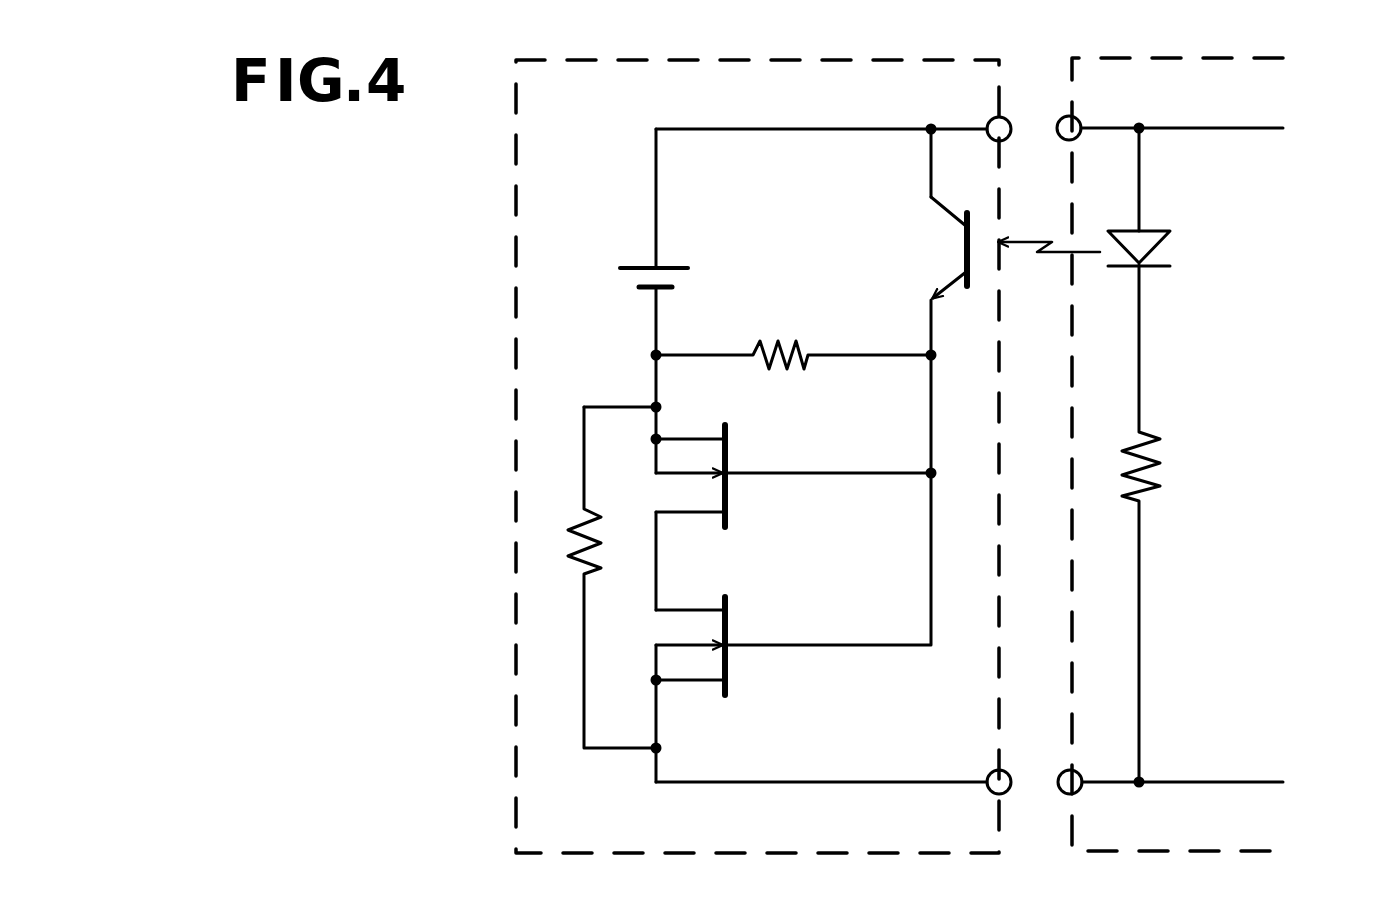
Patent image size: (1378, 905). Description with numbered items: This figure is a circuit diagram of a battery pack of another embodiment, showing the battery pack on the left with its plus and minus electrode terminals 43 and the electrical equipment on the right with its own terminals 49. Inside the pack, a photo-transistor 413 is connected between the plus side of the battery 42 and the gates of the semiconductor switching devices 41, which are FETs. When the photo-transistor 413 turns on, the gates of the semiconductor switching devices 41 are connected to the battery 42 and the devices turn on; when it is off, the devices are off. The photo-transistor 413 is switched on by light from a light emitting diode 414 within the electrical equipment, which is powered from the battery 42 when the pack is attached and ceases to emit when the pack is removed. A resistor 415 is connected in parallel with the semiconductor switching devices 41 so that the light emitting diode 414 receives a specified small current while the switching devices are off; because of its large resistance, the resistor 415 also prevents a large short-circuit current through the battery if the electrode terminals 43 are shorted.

The semiconductor switching devices 41 is at (637, 625).
The battery 42 is at (674, 265).
The electrode terminals 43 is at (990, 120).
The terminal 49 is at (1077, 125).
The photo-transistor 413 is at (942, 228).
The light emitting diode 414 is at (1152, 240).
The resistor 415 is at (572, 527).